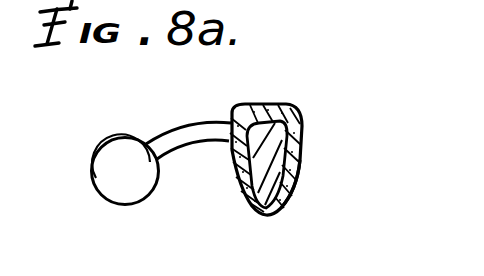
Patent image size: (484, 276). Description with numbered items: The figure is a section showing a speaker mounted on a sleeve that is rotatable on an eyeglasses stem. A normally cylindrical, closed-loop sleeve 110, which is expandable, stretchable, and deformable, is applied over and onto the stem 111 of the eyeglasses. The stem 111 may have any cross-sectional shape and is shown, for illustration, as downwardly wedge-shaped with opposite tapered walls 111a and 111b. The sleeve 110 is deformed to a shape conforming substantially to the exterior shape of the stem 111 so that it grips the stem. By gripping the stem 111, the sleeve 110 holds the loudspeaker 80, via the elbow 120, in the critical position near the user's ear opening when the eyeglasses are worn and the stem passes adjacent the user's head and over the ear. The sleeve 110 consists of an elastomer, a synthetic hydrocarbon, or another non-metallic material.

The loudspeaker 80 is at (118, 183).
The elbow 120 is at (169, 140).
The sleeve 110 is at (282, 145).
The stem 111 is at (270, 137).
The tapered wall 111a is at (246, 160).
The tapered wall 111b is at (297, 164).